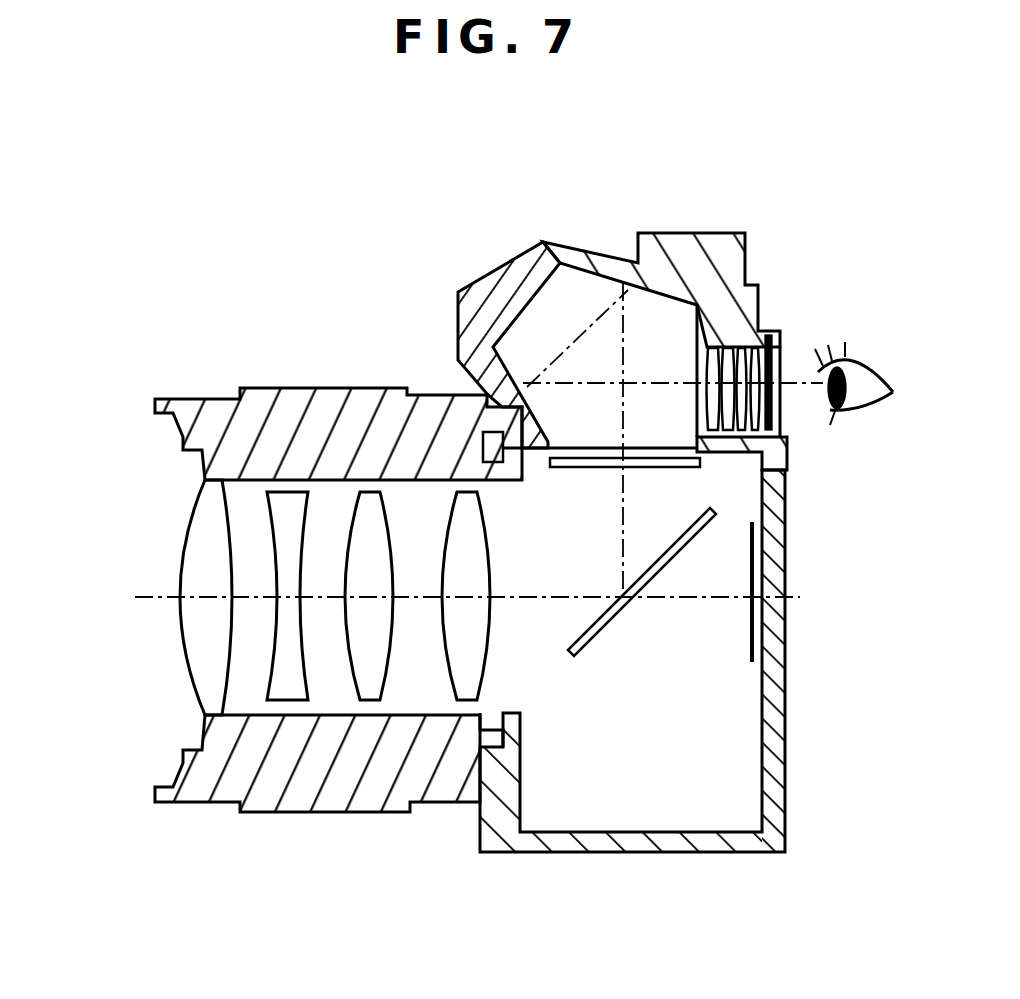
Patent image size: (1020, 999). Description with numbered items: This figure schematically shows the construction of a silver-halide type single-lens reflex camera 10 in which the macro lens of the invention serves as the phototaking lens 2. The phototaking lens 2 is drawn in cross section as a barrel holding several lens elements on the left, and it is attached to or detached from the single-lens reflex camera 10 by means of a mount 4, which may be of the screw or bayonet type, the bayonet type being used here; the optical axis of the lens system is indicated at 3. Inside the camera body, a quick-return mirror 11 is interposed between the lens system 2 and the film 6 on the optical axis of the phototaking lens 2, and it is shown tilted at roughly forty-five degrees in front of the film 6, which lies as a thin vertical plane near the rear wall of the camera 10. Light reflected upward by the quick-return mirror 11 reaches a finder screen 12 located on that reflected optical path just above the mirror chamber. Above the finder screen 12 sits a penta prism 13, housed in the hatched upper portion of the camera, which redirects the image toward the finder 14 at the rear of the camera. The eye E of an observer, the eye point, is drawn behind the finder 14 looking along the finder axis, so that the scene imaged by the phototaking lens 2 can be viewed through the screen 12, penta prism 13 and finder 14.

The phototaking lens 2 is at (165, 686).
The optical axis 3 is at (528, 602).
The mount 4 is at (478, 772).
The film 6 is at (748, 652).
The single-lens reflex camera 10 is at (790, 752).
The quick-return mirror 11 is at (590, 650).
The finder screen 12 is at (578, 468).
The penta prism 13 is at (668, 292).
The finder 14 is at (765, 468).
The eye of an observer E is at (862, 362).